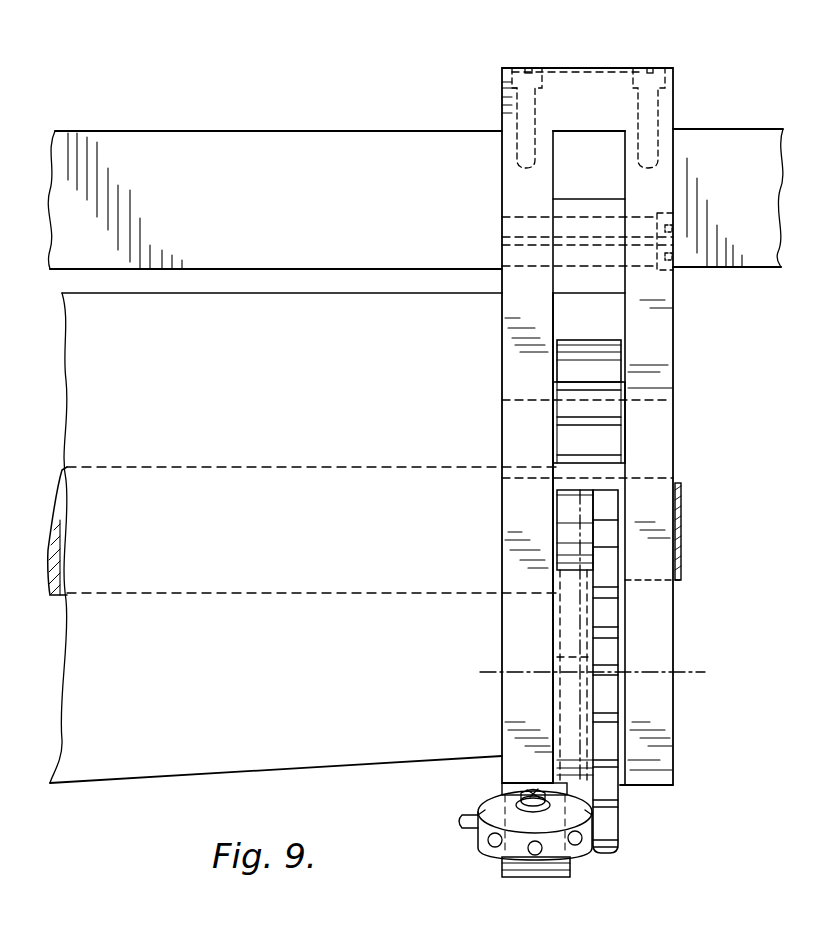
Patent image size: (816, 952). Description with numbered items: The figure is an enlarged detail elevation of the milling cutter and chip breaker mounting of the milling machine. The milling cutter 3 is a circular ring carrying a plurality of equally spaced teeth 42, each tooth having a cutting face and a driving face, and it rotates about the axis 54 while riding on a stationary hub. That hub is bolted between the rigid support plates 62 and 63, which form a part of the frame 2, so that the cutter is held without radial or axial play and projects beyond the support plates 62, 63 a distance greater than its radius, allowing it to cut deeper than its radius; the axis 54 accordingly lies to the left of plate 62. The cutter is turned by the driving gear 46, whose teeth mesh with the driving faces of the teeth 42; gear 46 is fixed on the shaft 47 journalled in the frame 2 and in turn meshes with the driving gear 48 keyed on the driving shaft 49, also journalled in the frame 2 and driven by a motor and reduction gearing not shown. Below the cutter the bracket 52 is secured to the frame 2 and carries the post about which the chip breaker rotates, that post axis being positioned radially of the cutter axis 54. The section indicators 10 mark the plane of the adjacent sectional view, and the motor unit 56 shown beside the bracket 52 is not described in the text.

The frame 2 is at (128, 770).
The milling cutter 3 is at (612, 702).
The section line 10 is at (638, 16).
The teeth 42 is at (612, 670).
The driving gear 46 is at (612, 373).
The shaft 47 is at (660, 416).
The driving gear 48 is at (625, 614).
The driving shaft 49 is at (63, 500).
The bracket 52 is at (528, 872).
The axis 54 is at (706, 670).
The motor 56 is at (480, 838).
The support plate 62 is at (520, 693).
The support plate 63 is at (660, 750).